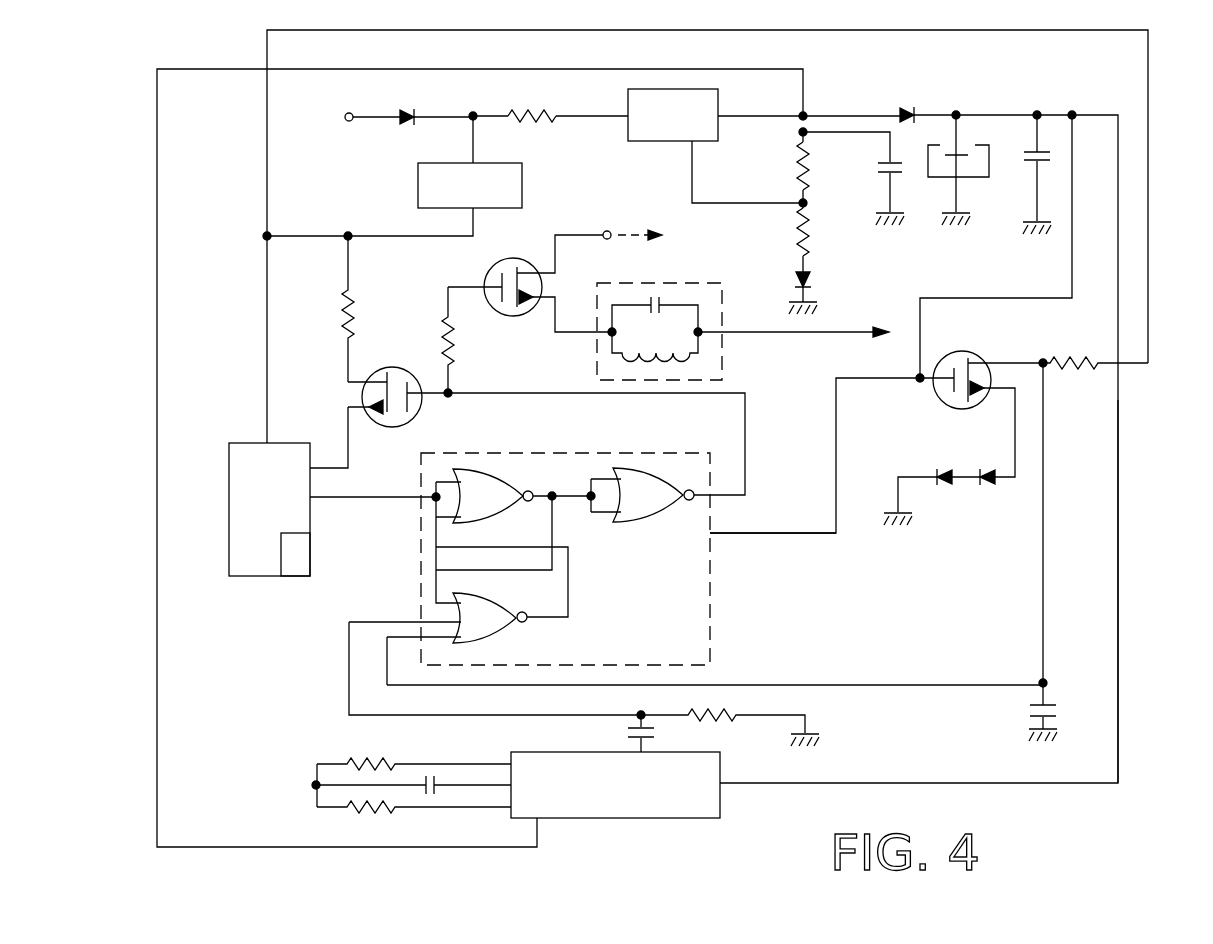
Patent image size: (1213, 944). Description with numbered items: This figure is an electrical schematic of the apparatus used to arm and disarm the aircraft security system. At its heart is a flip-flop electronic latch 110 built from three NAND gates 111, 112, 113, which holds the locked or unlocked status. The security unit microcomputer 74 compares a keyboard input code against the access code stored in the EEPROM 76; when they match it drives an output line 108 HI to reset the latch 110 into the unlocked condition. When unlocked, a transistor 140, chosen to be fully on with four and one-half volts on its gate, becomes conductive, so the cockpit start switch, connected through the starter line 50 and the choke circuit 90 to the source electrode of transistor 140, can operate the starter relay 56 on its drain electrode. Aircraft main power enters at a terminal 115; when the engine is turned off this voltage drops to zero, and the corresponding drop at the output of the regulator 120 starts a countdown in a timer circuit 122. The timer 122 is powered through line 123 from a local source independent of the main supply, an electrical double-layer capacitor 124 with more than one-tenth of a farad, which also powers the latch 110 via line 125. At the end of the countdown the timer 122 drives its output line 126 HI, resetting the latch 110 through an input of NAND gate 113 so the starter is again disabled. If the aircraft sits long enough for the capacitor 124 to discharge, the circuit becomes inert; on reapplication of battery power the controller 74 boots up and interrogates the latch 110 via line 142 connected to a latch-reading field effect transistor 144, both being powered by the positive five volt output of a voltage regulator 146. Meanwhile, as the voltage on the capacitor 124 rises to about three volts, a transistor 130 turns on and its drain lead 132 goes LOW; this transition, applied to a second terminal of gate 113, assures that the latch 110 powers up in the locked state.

The starter line 50 is at (796, 315).
The starter relay 56 is at (655, 238).
The security unit microcomputer 74 is at (240, 443).
The EEPROM 76 is at (297, 553).
The choke circuit 90 is at (722, 345).
The output line 108 is at (357, 497).
The latch 110 is at (606, 558).
The NAND gate 111 is at (492, 472).
The NAND gate 112 is at (656, 523).
The NAND gate 113 is at (500, 640).
The terminal 115 is at (352, 150).
The regulator 120 is at (646, 89).
The timer circuit 122 is at (655, 820).
The line 123 is at (1120, 542).
The electrical double-layer capacitor 124 is at (935, 178).
The line 125 is at (803, 548).
The output line 126 is at (520, 716).
The transistor 130 is at (947, 353).
The drain lead 132 is at (1013, 362).
The transistor 140 is at (505, 314).
The line 142 is at (346, 437).
The latch-reading field effect transistor 144 is at (378, 373).
The voltage regulator 146 is at (492, 209).